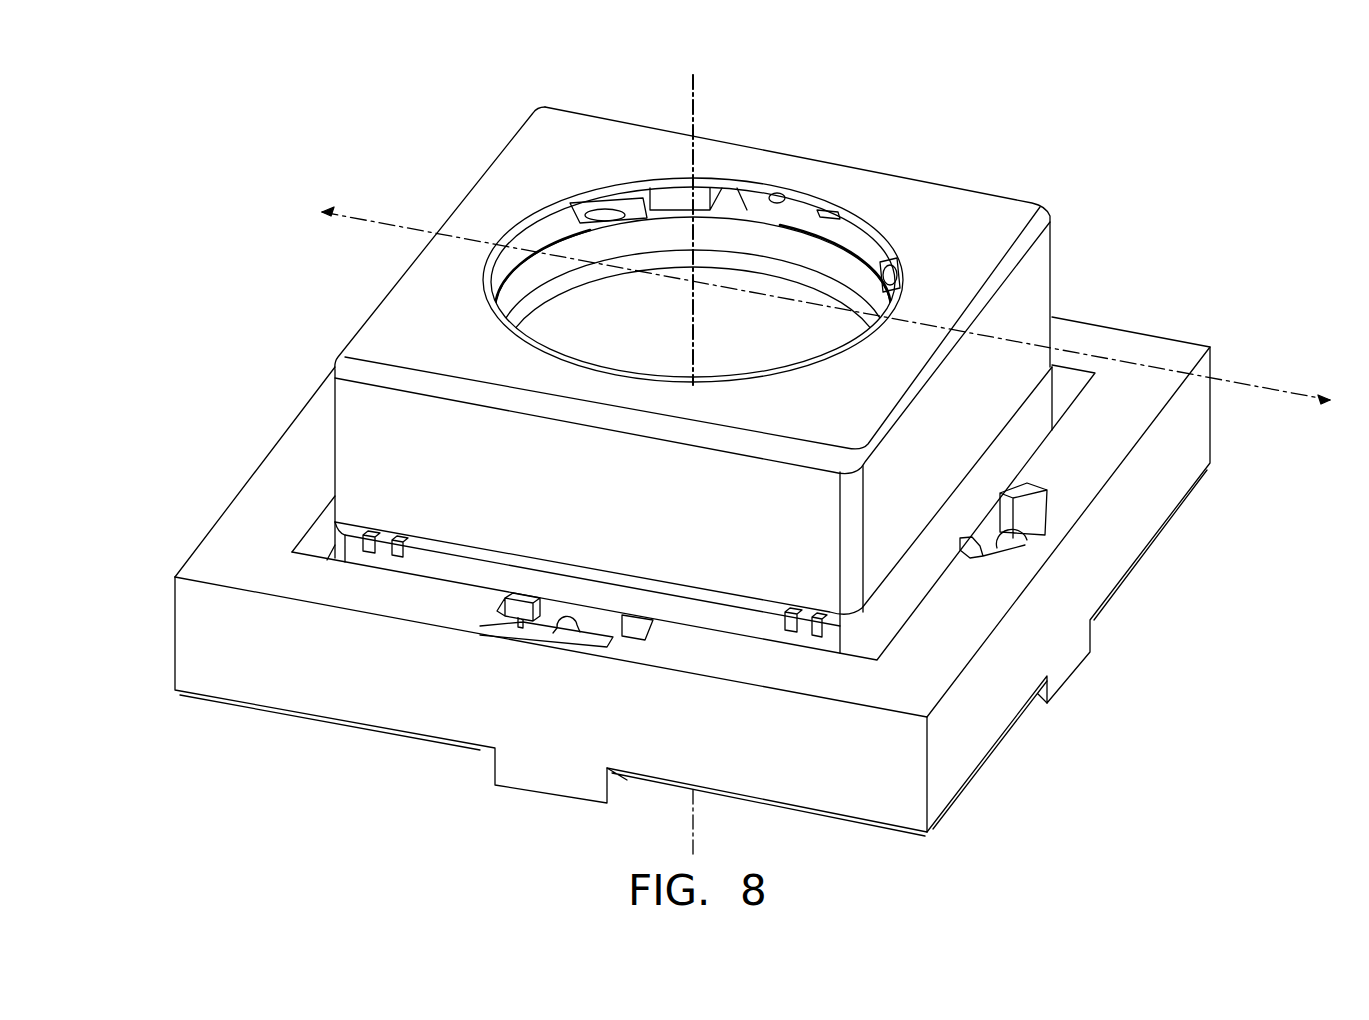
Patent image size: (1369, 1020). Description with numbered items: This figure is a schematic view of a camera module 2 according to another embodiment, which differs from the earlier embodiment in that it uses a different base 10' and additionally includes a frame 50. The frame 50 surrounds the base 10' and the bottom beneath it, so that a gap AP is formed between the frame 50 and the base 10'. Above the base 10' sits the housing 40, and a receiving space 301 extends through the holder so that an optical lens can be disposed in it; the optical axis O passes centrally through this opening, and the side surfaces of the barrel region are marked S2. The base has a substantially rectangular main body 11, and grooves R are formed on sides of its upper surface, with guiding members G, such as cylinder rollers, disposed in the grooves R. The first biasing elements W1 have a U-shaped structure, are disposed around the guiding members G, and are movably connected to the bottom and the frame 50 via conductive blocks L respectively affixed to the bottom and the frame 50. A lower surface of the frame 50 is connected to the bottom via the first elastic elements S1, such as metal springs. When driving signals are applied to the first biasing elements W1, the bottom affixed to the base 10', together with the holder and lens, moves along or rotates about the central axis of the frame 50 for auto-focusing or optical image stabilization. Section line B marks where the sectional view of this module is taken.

The camera module 2 is at (147, 67).
The receiving space 301 is at (543, 232).
The second elastic elements S2 is at (587, 250).
The optical axis O is at (693, 444).
The conductive blocks L is at (779, 193).
The housing 40 is at (960, 215).
The main body 11 is at (1160, 355).
The line B- B is at (800, 338).
The gap AP is at (315, 542).
The grooves R is at (1042, 488).
The first elastic elements S1 is at (1153, 535).
The guiding members G is at (1045, 507).
The first biasing elements W1 is at (1030, 512).
The base 10' is at (1067, 631).
The frame 50 is at (990, 690).